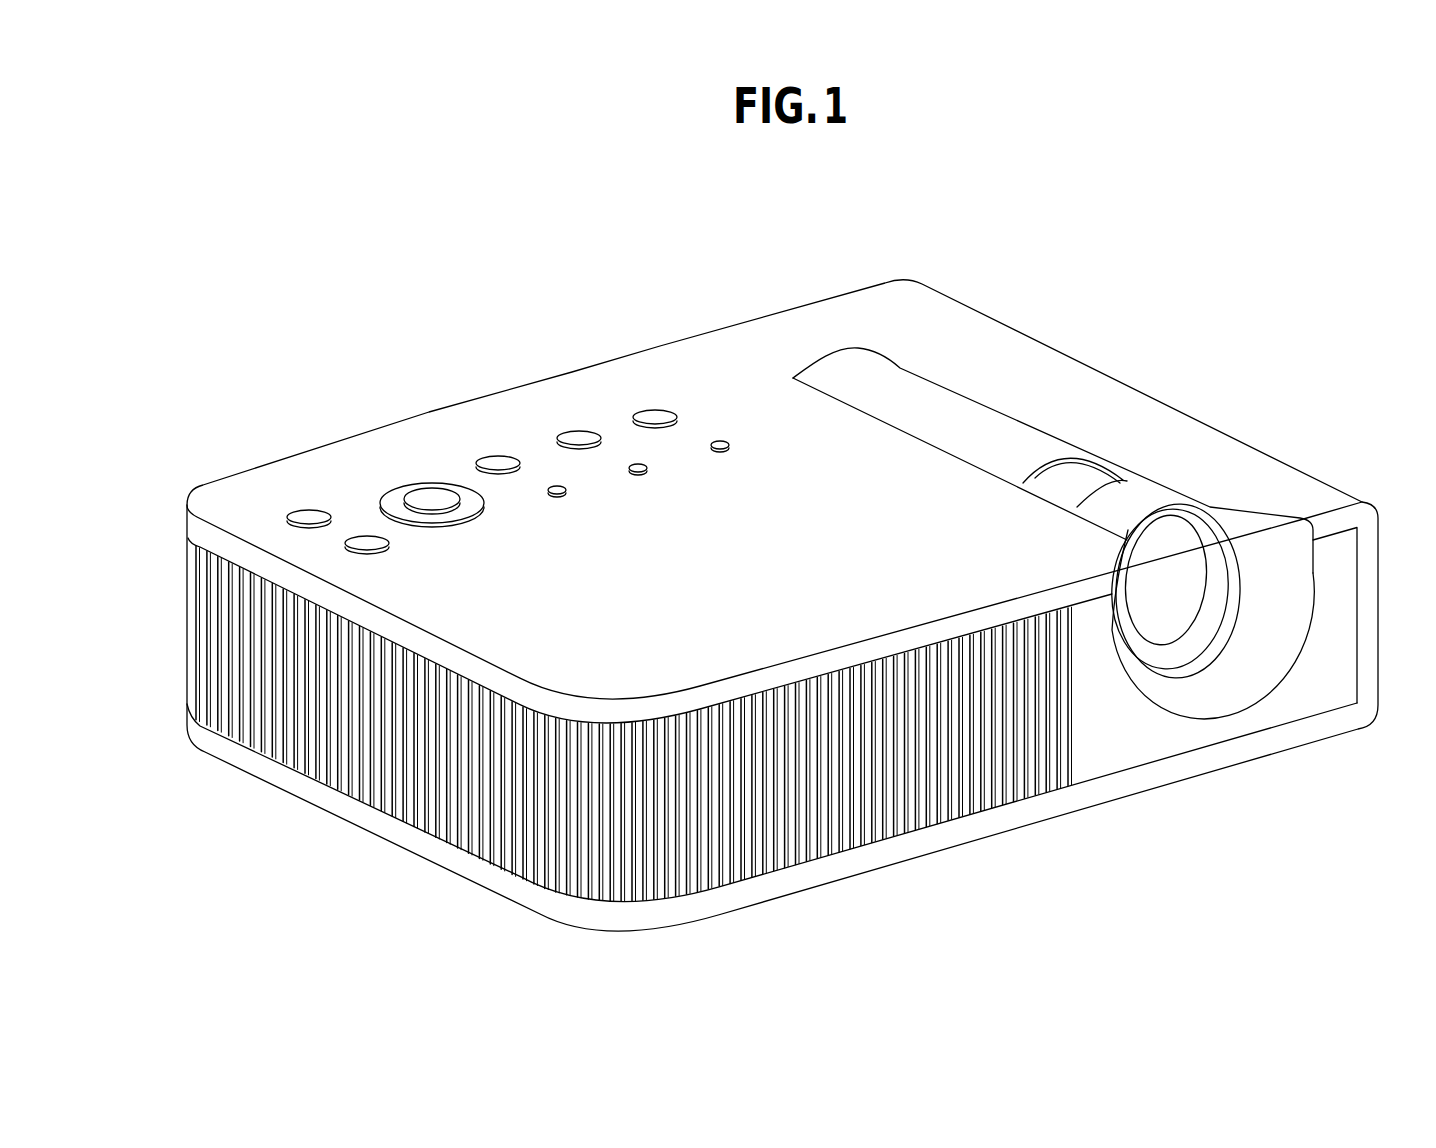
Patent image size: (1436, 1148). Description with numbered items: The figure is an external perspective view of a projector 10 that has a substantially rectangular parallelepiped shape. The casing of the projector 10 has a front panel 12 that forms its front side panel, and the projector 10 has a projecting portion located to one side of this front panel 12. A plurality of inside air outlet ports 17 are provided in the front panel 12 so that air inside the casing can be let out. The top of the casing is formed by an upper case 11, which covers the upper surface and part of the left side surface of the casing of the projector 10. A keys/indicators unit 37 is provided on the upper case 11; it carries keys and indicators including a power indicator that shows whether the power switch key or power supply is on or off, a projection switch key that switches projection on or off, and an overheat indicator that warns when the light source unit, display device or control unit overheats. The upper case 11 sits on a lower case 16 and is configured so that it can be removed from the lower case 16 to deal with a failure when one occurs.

The projector 10 is at (978, 222).
The upper case 11 is at (695, 367).
The front panel 12 is at (1102, 740).
The lower case 16 is at (362, 818).
The inside air outlet ports 17 is at (810, 838).
The keys/indicators unit 37 is at (425, 470).